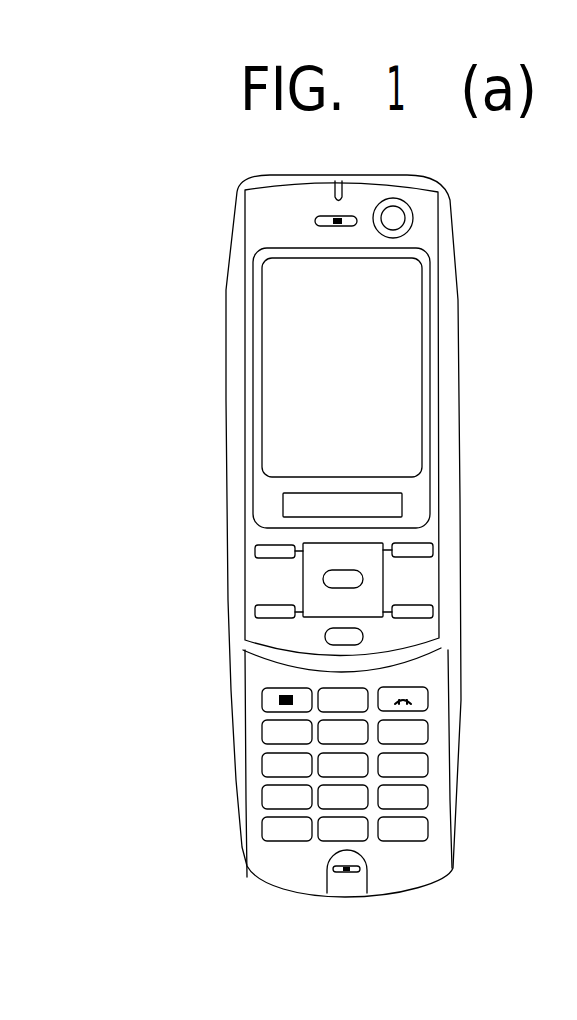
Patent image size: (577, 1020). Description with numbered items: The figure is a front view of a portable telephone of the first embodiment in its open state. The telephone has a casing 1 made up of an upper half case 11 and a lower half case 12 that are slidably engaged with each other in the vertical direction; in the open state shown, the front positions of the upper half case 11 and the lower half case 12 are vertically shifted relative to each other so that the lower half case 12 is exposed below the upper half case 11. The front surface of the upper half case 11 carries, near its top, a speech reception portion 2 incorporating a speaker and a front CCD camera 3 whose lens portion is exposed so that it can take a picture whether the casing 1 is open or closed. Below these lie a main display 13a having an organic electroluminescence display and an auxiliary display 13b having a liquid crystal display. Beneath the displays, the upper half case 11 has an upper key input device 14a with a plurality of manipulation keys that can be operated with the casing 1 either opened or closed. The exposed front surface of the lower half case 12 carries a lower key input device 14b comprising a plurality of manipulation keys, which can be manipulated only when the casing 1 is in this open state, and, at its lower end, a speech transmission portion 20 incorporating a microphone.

The casing 1 is at (160, 602).
The speech reception portion 2 is at (355, 217).
The CCD camera 3 is at (407, 220).
The upper half case 11 is at (247, 597).
The lower half case 12 is at (237, 672).
The main display 13a is at (415, 437).
The auxiliary display 13b is at (402, 502).
The upper key input device 14a is at (383, 580).
The lower key input device 14b is at (430, 764).
The speech transmission portion 20 is at (347, 870).